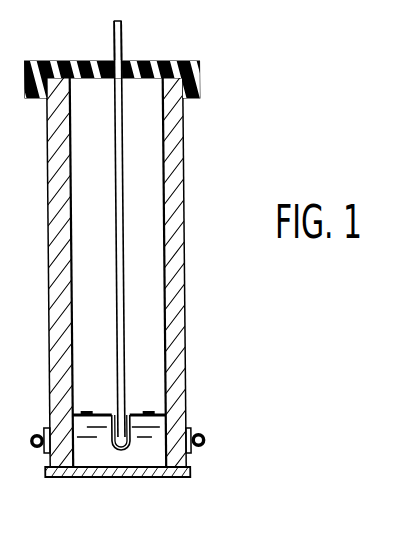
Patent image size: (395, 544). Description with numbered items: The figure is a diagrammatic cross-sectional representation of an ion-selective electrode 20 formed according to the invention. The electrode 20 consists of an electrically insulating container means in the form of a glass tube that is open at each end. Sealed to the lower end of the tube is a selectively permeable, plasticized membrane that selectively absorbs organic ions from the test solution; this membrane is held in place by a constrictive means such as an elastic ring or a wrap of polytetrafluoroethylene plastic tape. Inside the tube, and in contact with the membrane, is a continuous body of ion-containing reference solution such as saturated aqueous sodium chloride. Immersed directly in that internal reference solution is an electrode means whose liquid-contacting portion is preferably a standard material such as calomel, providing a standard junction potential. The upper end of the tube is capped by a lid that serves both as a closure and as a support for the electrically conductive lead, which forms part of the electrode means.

The electrode 20 is at (133, 256).